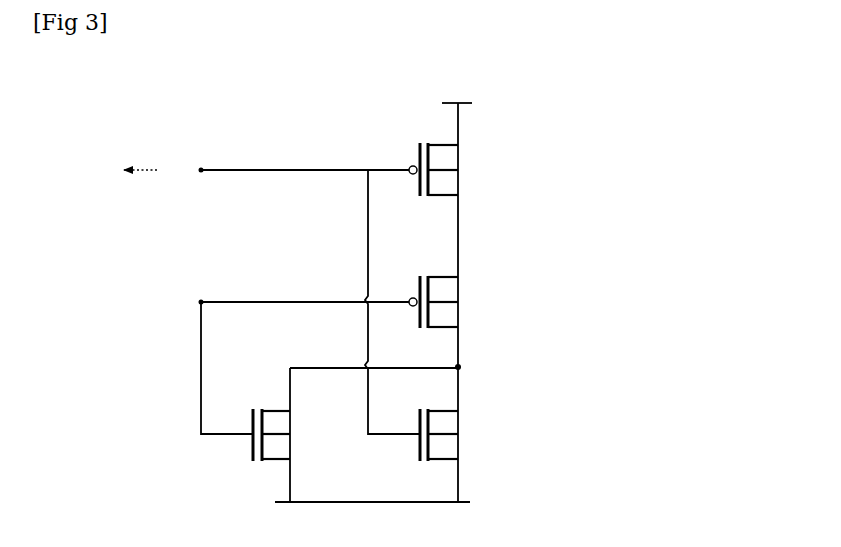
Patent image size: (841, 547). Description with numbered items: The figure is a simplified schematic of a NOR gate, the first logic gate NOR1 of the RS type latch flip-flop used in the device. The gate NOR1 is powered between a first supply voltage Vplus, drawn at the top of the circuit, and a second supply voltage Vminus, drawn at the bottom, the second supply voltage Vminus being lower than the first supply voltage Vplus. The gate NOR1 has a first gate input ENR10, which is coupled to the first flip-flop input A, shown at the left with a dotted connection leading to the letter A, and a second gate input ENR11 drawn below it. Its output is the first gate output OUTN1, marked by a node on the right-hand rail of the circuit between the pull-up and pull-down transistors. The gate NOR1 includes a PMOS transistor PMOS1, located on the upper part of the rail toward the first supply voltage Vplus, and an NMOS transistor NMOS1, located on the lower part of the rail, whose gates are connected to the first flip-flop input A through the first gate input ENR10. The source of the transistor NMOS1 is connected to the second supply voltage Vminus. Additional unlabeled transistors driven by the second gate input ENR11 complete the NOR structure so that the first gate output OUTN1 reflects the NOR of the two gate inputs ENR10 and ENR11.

The first logic gate NOR1 is at (613, 97).
The PMOS transistor PMOS1 is at (472, 170).
The NMOS transistor NMOS1 is at (472, 423).
The first gate output OUTN1 is at (462, 367).
The first gate input ENR10 is at (286, 158).
The second gate input ENR11 is at (286, 356).
The first supply voltage Vplus is at (458, 89).
The second supply voltage Vminus is at (387, 514).
The first flip-flop input A is at (125, 171).